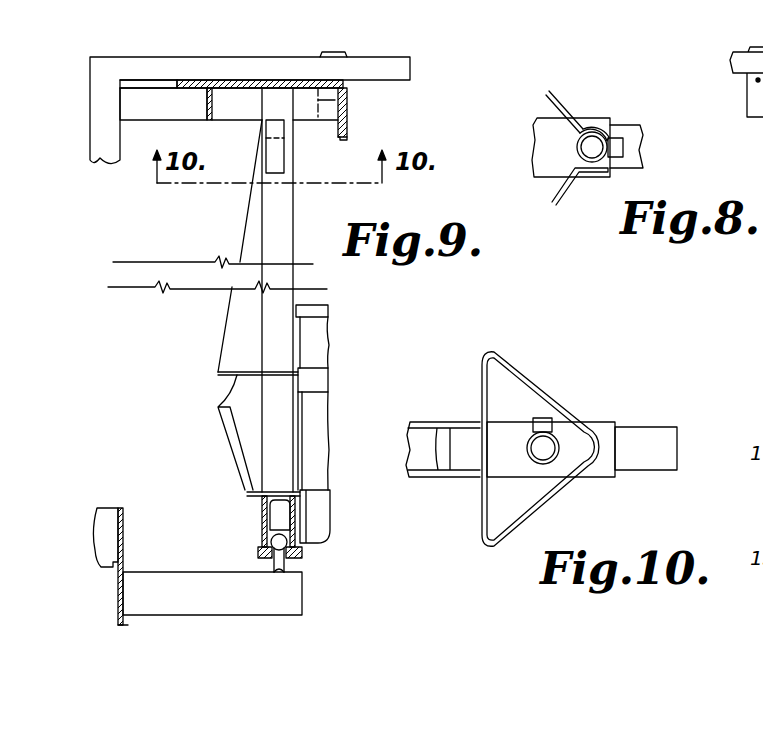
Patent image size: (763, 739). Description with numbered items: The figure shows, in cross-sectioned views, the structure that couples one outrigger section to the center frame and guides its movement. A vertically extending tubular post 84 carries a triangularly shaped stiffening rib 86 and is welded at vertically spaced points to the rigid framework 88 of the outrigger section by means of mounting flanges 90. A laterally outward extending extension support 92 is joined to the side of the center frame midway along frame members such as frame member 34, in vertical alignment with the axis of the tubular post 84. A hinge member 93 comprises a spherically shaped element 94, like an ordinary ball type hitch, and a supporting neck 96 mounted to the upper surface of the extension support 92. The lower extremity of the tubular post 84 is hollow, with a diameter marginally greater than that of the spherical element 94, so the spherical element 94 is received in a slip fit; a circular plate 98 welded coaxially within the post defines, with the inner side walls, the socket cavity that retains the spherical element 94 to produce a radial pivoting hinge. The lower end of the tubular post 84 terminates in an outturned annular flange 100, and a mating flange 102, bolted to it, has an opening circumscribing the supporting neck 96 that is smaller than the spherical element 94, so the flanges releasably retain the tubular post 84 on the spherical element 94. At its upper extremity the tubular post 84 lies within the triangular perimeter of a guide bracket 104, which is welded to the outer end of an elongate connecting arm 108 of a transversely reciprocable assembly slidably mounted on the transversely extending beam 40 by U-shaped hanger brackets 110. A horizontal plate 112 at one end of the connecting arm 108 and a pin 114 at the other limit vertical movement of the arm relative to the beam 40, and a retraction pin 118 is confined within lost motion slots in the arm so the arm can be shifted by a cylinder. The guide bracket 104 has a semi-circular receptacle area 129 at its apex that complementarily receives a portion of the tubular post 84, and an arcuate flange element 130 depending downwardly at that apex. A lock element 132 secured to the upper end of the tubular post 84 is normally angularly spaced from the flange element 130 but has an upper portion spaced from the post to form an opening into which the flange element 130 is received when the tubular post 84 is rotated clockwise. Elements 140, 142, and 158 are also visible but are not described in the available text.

In FIG. 9, the frame member 34 is at (125, 582).
In FIG. 9, the transversely extending beam 40 is at (266, 62).
In FIG. 8, the transversely extending beam 40 is at (640, 128).
In FIG. 10, the transversely extending beam 40 is at (668, 438).
In FIG. 9, the tubular post 84 is at (283, 210).
In FIG. 8, the tubular post 84 is at (571, 147).
In FIG. 10, the tubular post 84 is at (530, 450).
In FIG. 9, the stiffening rib 86 is at (240, 312).
In FIG. 9, the rigid framework 88 is at (325, 380).
In FIG. 9, the mounting flange 90 is at (226, 418).
In FIG. 9, the extension support 92 is at (295, 603).
In FIG. 9, the hinge member 93 is at (270, 580).
In FIG. 9, the spherically shaped element 94 is at (298, 545).
In FIG. 9, the supporting neck 96 is at (300, 569).
In FIG. 9, the circular plate 98 is at (268, 518).
In FIG. 9, the annular flange 100 is at (270, 547).
In FIG. 9, the mating flange 102 is at (262, 566).
In FIG. 9, the guide bracket 104 is at (330, 100).
In FIG. 8, the guide bracket 104 is at (568, 106).
In FIG. 10, the guide bracket 104 is at (533, 372).
In FIG. 9, the connecting arm 108 is at (134, 108).
In FIG. 10, the connecting arm 108 is at (437, 468).
In FIG. 9, the hanger bracket 110 is at (338, 52).
In FIG. 8, the hanger bracket 110 is at (750, 47).
In FIG. 9, the horizontal plate 112 is at (192, 80).
In FIG. 8, the horizontal plate 112 is at (535, 128).
In FIG. 10, the horizontal plate 112 is at (535, 472).
In FIG. 8, the pin 114 is at (750, 85).
In FIG. 8, the retraction pin 118 is at (736, 136).
In FIG. 8, the semi-circular receptacle area 129 is at (598, 125).
In FIG. 10, the semi-circular receptacle area 129 is at (590, 468).
In FIG. 9, the arcuate flange element 130 is at (348, 128).
In FIG. 8, the arcuate flange element 130 is at (592, 174).
In FIG. 10, the arcuate flange element 130 is at (612, 447).
In FIG. 9, the lock element 132 is at (283, 128).
In FIG. 8, the lock element 132 is at (624, 150).
In FIG. 10, the lock element 132 is at (541, 418).
In FIG. 10, the member 140 is at (744, 510).
In FIG. 9, the collar 142 is at (323, 350).
In FIG. 10, the member 158 is at (750, 410).